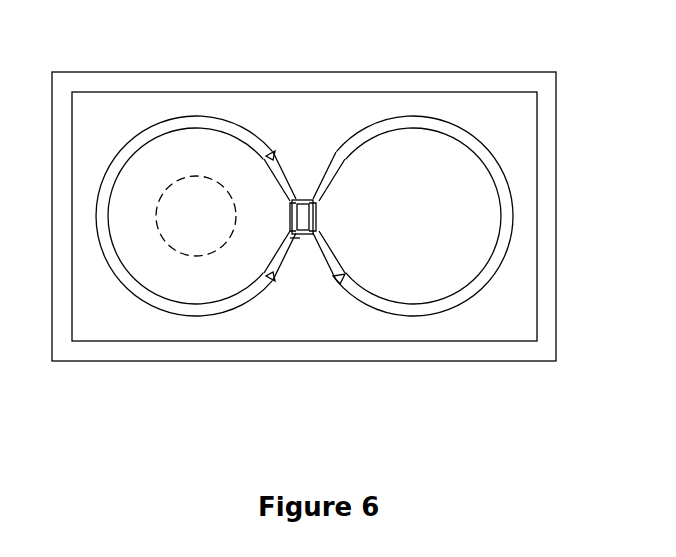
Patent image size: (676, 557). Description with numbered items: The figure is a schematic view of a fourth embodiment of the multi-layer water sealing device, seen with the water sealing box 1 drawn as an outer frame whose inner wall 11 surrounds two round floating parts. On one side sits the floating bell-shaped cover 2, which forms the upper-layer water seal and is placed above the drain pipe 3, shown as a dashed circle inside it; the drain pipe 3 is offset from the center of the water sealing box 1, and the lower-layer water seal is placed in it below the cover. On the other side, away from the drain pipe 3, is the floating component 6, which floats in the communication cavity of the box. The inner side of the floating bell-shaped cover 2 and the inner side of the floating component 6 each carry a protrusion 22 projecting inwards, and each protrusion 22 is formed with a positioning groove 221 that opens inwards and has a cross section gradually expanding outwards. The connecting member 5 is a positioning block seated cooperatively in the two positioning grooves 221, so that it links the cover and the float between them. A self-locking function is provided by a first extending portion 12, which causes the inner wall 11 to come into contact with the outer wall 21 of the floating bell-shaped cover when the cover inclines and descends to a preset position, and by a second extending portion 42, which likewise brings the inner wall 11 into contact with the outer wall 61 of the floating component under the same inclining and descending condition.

The water sealing box 1 is at (77, 110).
The inner wall of water sealing box 11 is at (133, 136).
The floating bell-shaped cover 2 is at (172, 160).
The outer wall of floating bell-shaped cover 21 is at (237, 133).
The drain pipe 3 is at (186, 254).
The connecting member 5 is at (310, 200).
The floating component 6 is at (358, 167).
The outer wall of floating component 61 is at (413, 127).
The first extending portion 12 is at (272, 153).
The protrusion 22 is at (290, 238).
The positioning groove 221 is at (290, 238).
The second extending portion 42 is at (340, 155).